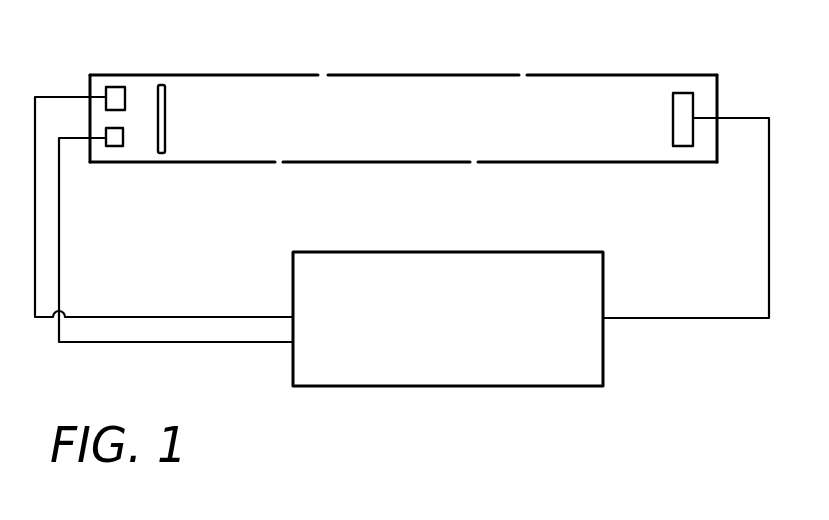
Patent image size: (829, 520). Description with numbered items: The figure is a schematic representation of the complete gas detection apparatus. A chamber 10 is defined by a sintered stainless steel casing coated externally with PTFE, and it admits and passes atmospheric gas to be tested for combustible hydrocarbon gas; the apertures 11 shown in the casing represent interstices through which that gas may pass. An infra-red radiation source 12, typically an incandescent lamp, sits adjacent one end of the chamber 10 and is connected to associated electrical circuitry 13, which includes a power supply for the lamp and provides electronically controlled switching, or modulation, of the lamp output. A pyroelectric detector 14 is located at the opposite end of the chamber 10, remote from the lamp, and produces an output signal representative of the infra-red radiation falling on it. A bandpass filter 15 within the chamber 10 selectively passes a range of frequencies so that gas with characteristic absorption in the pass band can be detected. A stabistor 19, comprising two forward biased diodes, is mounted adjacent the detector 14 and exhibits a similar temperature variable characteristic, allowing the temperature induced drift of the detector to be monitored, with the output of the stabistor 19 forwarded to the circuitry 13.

The chamber 10 is at (403, 109).
The apertures 11 is at (521, 72).
The infra-red radiation source 12 is at (683, 93).
The electrical circuitry 13 is at (473, 338).
The pyroelectric detector 14 is at (118, 87).
The bandpass filter 15 is at (166, 110).
The stabistor 19 is at (115, 146).